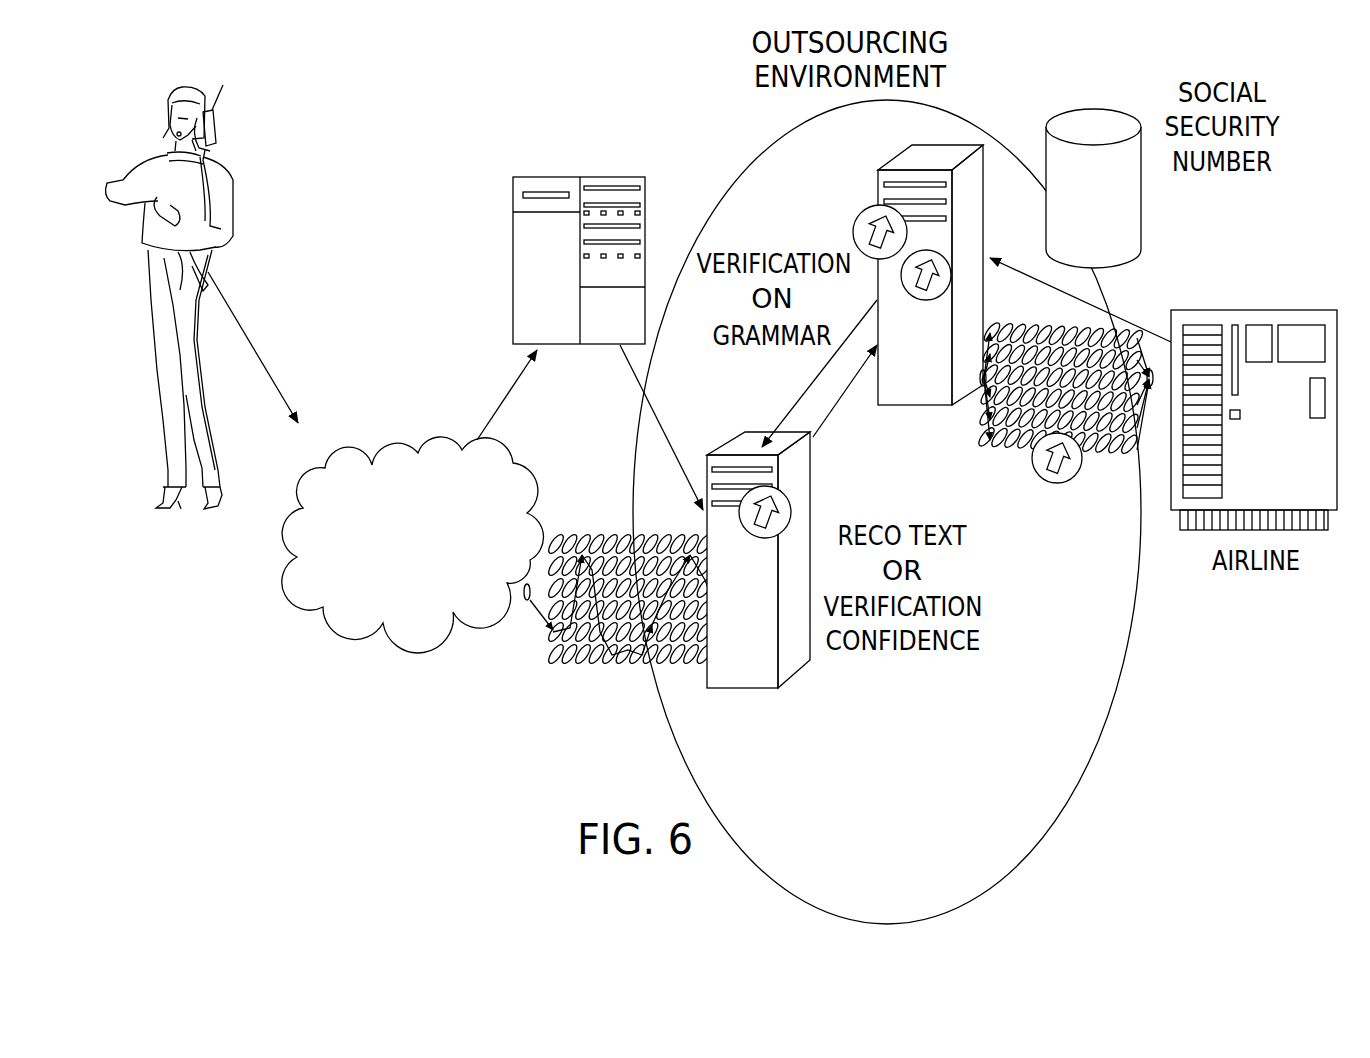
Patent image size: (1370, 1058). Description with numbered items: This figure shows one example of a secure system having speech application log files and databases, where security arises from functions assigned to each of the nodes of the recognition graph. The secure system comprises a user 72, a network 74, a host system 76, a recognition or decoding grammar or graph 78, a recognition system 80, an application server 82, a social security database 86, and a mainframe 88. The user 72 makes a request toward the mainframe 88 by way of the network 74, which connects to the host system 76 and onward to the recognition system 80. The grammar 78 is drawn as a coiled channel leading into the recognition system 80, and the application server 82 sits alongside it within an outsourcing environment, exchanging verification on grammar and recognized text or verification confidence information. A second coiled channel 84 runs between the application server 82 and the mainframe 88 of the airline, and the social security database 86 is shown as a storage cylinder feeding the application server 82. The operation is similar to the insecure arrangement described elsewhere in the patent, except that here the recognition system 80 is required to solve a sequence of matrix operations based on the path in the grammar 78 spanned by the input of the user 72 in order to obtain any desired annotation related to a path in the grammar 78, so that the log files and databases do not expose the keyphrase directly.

The user 72 is at (218, 163).
The network 74 is at (418, 452).
The host system 76 is at (513, 226).
The recognition or decoding grammar or graph 78 is at (594, 667).
The recognition system 80 is at (789, 680).
The application server 82 is at (892, 408).
The secure channel to airline 84 is at (1133, 448).
The social security database 86 is at (1142, 228).
The mainframe 88 is at (1302, 308).